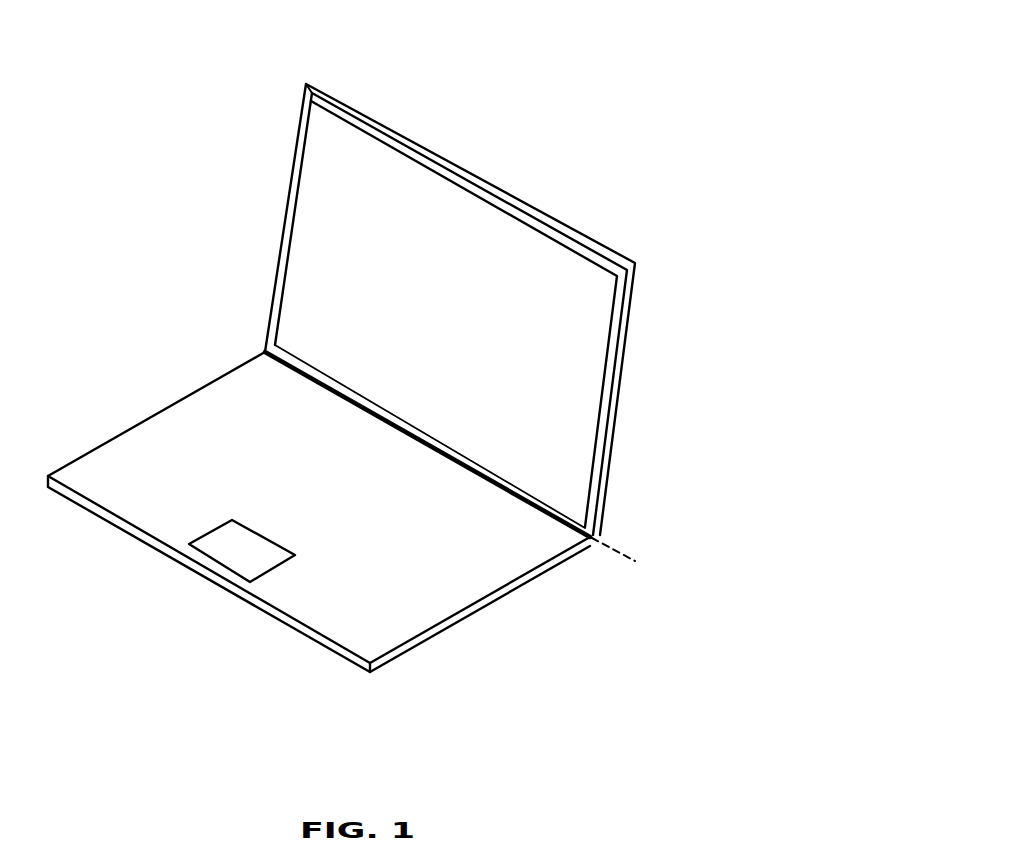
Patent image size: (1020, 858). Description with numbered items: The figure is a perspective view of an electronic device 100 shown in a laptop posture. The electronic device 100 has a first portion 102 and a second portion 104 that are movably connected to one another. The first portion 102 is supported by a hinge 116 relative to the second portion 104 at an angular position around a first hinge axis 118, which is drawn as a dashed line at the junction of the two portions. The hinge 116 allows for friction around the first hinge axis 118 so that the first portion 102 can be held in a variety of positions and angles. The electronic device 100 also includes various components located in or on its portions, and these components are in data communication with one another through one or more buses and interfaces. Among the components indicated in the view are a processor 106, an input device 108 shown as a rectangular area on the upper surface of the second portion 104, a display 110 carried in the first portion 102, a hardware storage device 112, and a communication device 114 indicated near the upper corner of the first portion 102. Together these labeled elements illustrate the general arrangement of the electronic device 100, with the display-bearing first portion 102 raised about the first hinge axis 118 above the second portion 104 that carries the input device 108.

The electronic device 100 is at (486, 147).
The first portion 102 is at (504, 270).
The second portion 104 is at (467, 613).
The processor 106 is at (390, 638).
The input device 108 is at (231, 548).
The display 110 is at (580, 388).
The hardware storage device 112 is at (513, 545).
The communication device 114 is at (332, 80).
The hinge 116 is at (263, 336).
The first hinge axis 118 is at (663, 533).